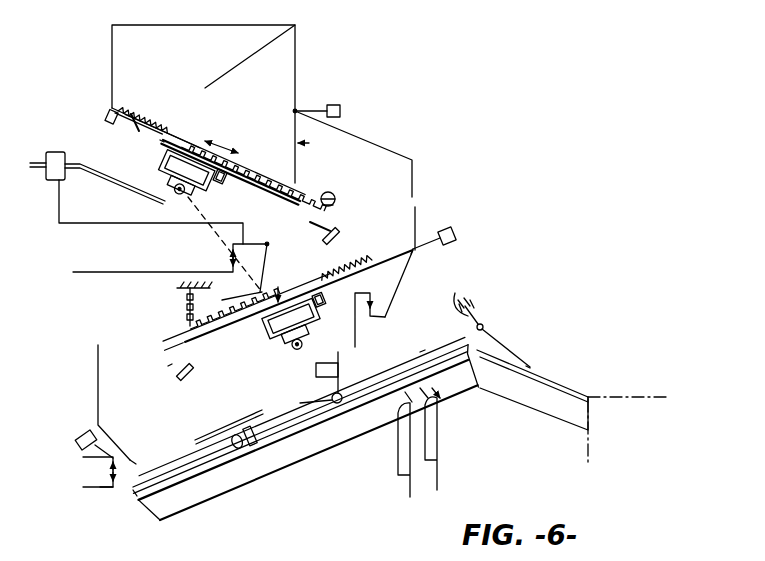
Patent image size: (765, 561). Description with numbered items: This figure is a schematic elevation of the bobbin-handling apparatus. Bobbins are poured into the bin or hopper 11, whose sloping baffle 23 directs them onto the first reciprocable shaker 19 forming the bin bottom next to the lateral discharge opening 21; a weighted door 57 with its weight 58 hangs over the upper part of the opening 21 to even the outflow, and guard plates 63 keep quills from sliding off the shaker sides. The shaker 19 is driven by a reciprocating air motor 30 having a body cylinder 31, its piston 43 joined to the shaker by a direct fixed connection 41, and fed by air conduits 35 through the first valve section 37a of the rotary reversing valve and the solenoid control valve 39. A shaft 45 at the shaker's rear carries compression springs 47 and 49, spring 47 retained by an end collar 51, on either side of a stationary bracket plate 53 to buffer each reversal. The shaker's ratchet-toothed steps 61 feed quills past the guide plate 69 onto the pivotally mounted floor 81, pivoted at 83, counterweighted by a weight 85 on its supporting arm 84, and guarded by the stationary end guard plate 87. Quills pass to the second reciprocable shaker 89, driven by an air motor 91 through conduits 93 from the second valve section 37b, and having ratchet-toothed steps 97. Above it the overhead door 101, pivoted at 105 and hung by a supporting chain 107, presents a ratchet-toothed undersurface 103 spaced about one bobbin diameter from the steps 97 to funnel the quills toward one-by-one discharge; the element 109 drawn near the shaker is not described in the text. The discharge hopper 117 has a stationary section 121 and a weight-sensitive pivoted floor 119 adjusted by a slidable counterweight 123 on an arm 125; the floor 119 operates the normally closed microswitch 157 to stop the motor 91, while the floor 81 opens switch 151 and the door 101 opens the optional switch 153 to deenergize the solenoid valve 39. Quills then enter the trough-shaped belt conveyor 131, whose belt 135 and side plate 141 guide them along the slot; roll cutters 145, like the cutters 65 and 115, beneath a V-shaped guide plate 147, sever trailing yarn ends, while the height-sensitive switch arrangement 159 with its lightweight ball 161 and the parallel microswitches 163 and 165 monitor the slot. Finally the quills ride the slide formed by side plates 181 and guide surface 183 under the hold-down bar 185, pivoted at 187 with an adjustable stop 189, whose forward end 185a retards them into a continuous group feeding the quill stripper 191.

The bin or hopper 11 is at (163, 58).
The first reciprocable shaker 19 is at (197, 140).
The lateral discharge opening 21 is at (313, 133).
The sloping baffle 23 is at (240, 64).
The reciprocating air motor 30 is at (220, 180).
The body cylinder 31 is at (162, 170).
The air conduits 35 is at (225, 244).
The first valve section of dual section rotary reversing valve 37a is at (167, 202).
The second valve section of dual valve 37b is at (316, 374).
The solenoid control valve 39 is at (54, 152).
The direct fixed connection 41 is at (310, 164).
The piston 43 is at (223, 148).
The longitudinally extending shaft 45 is at (152, 128).
The resilient compression spring 47 is at (122, 130).
The resilient compression spring 49 is at (156, 142).
The end collar or flange arrangement 51 is at (104, 115).
The stationary bracket plate 53 is at (134, 114).
The pivotally mounted door 57 is at (298, 178).
The weight 58 is at (338, 106).
The ratchet-toothed steps 61 is at (333, 193).
The guard plate 63 is at (394, 149).
The roll cutters 65 is at (332, 233).
The guide plate 69 is at (335, 224).
The pivotally mounted floor 81 is at (396, 248).
The pivot 83 is at (407, 283).
The supporting arm 84 is at (415, 256).
The weight 85 is at (449, 234).
The stationary end guard plate 87 is at (416, 216).
The second reciprocable shaker 89 is at (287, 287).
The air driven motor 91 is at (260, 346).
The conduits 93 is at (310, 331).
The ratchet-toothed steps 97 is at (178, 364).
The overhead door 101 is at (182, 326).
The ratchet-toothed undersurface 103 is at (252, 302).
The pivot 105 is at (268, 245).
The supporting chain 107 is at (185, 304).
The rail end 109 is at (170, 364).
The roll cutters 115 is at (179, 382).
The discharge hopper 117 is at (115, 442).
The pivotally mounted weight-sensitive floor 119 is at (132, 458).
The stationary section of flooring 121 is at (80, 422).
The slidable counterweight 123 is at (72, 442).
The arm 125 is at (76, 457).
The belt conveyor 131 is at (412, 356).
The continuous belt 135 is at (135, 496).
The side plate 141 is at (340, 442).
The roll cutters 145 is at (248, 446).
The guide plate 147 is at (212, 428).
The sensitive switch 151 is at (359, 306).
The sensitive switch 153 is at (226, 263).
The microswitch 157 is at (106, 487).
The height-sensitive switch arrangement 159 is at (300, 402).
The lightweight ball or mass 161 is at (343, 378).
The microswitch 163 is at (429, 420).
The microswitch 165 is at (442, 399).
The side plates of slide 181 is at (582, 424).
The guide surface 183 is at (580, 394).
The hold-down bar 185 is at (502, 344).
The forward end of hold-down bar 185a is at (528, 368).
The pivot 187 is at (481, 326).
The adjustable stop 189 is at (474, 294).
The quill stripper 191 is at (646, 443).